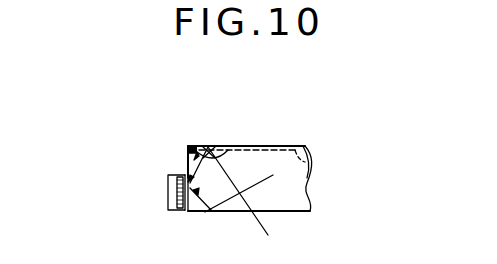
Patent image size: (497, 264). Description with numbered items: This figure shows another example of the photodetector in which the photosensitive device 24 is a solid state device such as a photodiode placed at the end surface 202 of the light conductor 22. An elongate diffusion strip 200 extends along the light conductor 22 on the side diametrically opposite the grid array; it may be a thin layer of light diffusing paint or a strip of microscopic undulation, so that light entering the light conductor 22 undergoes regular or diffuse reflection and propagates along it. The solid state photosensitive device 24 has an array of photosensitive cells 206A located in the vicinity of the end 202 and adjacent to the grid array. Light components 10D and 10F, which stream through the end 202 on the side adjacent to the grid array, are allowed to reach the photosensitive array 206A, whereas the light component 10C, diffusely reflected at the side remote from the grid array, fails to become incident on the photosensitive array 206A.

The light component 10C is at (189, 146).
The light component 10F is at (220, 146).
The light component 10D is at (205, 212).
The light conductor 22 is at (270, 145).
The diffusion strip 200 is at (308, 157).
The array of photosensitive cells 206A is at (187, 171).
The photosensitive device 24 is at (168, 194).
The end surface 202 is at (174, 210).